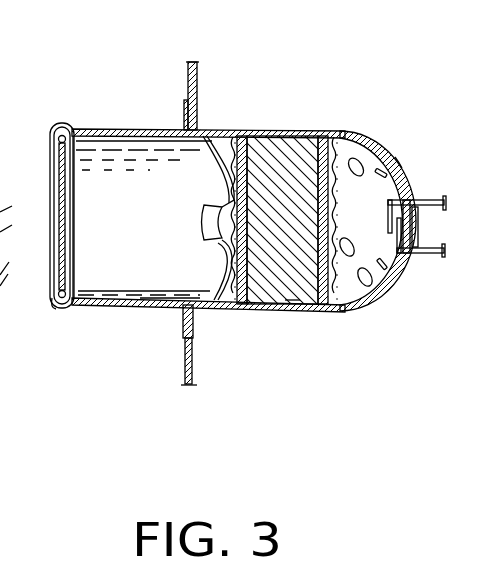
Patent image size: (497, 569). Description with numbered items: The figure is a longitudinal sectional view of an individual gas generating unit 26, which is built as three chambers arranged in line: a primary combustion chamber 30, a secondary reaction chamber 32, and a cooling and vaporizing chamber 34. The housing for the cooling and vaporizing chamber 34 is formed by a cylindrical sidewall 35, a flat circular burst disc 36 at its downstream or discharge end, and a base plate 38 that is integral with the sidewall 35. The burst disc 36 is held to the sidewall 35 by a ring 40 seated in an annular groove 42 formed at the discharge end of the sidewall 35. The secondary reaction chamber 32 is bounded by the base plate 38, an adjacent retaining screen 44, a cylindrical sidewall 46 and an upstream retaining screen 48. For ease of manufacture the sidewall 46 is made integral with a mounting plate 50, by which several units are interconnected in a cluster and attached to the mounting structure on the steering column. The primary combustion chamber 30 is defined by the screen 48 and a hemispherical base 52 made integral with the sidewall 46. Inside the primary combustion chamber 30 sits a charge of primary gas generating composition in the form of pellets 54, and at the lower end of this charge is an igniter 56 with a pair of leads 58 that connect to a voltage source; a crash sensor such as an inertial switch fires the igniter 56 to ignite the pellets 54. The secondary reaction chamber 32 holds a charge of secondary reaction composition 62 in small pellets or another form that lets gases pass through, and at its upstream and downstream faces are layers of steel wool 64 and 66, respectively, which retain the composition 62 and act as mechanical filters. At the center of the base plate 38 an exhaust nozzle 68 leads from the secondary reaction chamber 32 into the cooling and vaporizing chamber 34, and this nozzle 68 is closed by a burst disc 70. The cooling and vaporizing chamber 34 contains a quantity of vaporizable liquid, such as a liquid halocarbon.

The gas generating unit 26 is at (275, 62).
The primary combustion chamber 30 is at (352, 298).
The secondary reaction chamber 32 is at (277, 150).
The cooling and vaporizing chamber 34 is at (128, 275).
The cylindrical sidewall 35 is at (142, 307).
The burst disc 36 is at (60, 228).
The base plate 38 is at (223, 167).
The ring 40 is at (65, 297).
The annular groove 42 is at (50, 283).
The retaining screen 44 is at (232, 292).
The cylindrical sidewall 46 is at (252, 135).
The upstream retaining screen 48 is at (338, 137).
The mounting plate 50 is at (192, 367).
The hemispherical base 52 is at (392, 156).
The pellets 54 is at (362, 165).
The igniter 56 is at (398, 253).
The leads 58 is at (433, 198).
The secondary reaction composition 62 is at (292, 292).
The steel wool layer 64 is at (327, 140).
The steel wool layer 66 is at (246, 297).
The exhaust nozzle 68 is at (203, 233).
The burst disc 70 is at (204, 208).